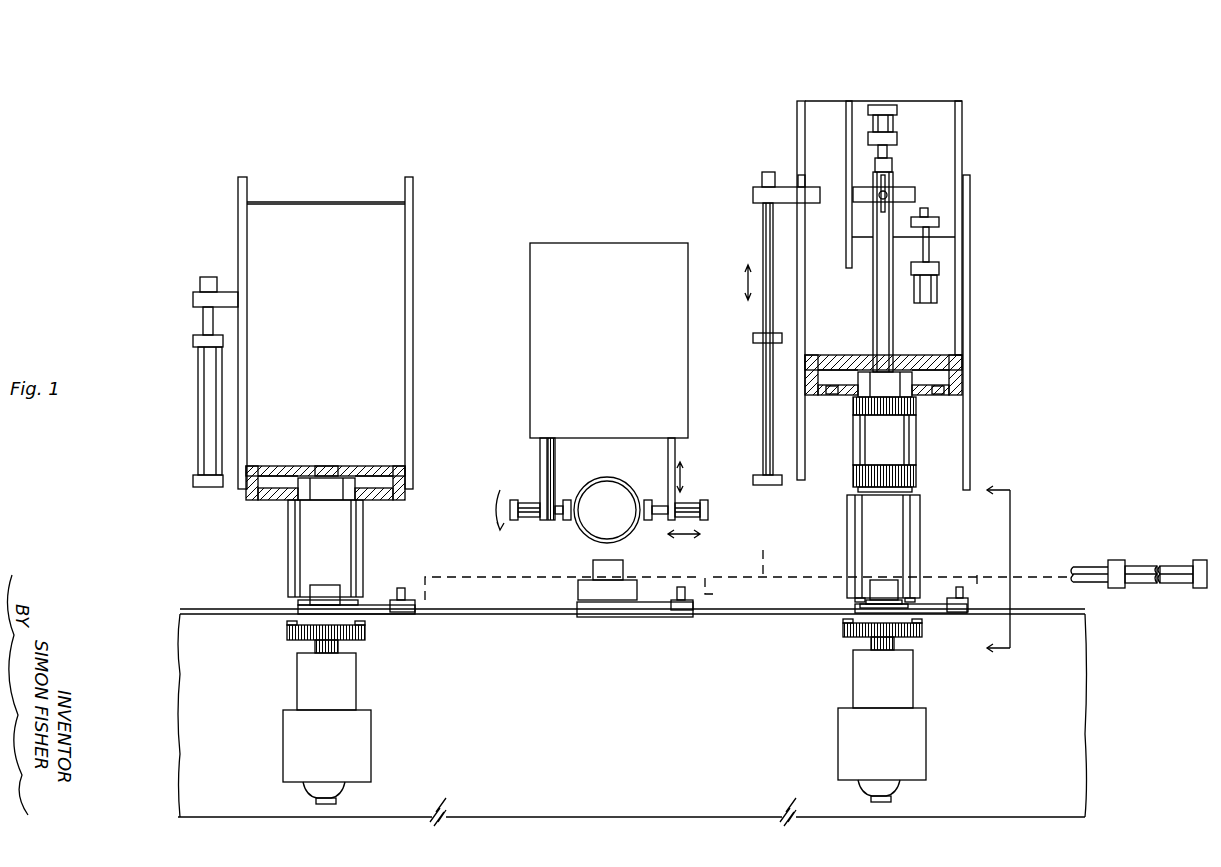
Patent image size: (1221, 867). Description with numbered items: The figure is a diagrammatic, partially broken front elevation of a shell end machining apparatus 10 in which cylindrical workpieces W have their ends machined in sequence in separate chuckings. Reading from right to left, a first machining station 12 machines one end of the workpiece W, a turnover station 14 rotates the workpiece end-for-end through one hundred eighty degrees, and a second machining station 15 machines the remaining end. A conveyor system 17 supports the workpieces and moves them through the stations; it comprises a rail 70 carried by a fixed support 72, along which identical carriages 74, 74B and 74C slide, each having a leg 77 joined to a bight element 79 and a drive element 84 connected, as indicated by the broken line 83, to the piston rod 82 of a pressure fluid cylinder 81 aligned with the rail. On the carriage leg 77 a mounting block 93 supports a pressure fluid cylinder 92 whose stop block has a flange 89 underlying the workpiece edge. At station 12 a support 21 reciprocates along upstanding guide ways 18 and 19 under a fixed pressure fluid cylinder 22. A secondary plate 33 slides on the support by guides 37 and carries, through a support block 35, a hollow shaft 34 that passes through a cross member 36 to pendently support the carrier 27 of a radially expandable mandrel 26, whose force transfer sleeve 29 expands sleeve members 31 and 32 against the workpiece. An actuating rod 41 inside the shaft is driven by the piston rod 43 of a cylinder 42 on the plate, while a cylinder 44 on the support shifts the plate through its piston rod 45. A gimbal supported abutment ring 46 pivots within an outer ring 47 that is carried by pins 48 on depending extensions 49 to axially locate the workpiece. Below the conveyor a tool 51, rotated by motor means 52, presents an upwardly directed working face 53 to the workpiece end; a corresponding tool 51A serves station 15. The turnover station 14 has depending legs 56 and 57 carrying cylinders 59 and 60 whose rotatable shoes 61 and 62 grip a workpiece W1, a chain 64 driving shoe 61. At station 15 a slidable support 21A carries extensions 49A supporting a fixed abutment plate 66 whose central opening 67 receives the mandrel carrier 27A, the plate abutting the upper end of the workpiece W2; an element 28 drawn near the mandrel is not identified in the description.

The machining apparatus 10 is at (999, 80).
The first machining station 12 is at (937, 80).
The turnover station 14 is at (630, 232).
The second machining station 15 is at (352, 106).
The conveyor system 17 is at (1120, 604).
The guide way 18 is at (800, 178).
The guide way 19 is at (972, 195).
The support 21 is at (823, 107).
The vertically slidable support 21A is at (238, 510).
The pressure fluid cylinder 22 is at (755, 338).
The radially expandable mandrel 26 is at (930, 430).
The carrier 27 is at (905, 383).
The expanding mandrel carrier 27A is at (338, 476).
The plate 28 is at (905, 490).
The force transfer sleeve 29 is at (915, 445).
The expandable sleeve member 31 is at (915, 408).
The expandable sleeve member 32 is at (910, 475).
The secondary support plate 33 is at (903, 108).
The hollow shaft 34 is at (875, 288).
The support block 35 is at (862, 197).
The cross member 36 is at (925, 360).
The guides 37 is at (960, 115).
The actuating rod 41 is at (876, 163).
The pressure fluid cylinder 42 is at (881, 128).
The piston rod 43 is at (878, 150).
The pressure fluid cylinder 44 is at (930, 290).
The piston rod 45 is at (930, 250).
The abutment ring 46 is at (830, 398).
The outer ring 47 is at (822, 395).
The pins 48 is at (810, 388).
The depending extensions 49 is at (810, 362).
The extensions 49A is at (248, 490).
The tool 51 is at (845, 629).
The tool 51A is at (290, 633).
The motor means 52 is at (840, 692).
The working face 53 is at (916, 623).
The leg 56 is at (540, 452).
The leg 57 is at (675, 458).
The pressure fluid cylinder 59 is at (520, 524).
The pressure fluid cylinder 60 is at (708, 516).
The rotatable shoe 61 is at (567, 500).
The rotatable shoe 62 is at (648, 500).
The chain 64 is at (548, 465).
The abutment plate 66 is at (275, 500).
The central opening 67 is at (310, 500).
The rail 70 is at (1082, 613).
The fixed support 72 is at (1083, 707).
The carriage 74 is at (846, 614).
The carriage 74B is at (605, 620).
The carriage 74C is at (375, 614).
The leg 77 is at (950, 612).
The cross member 79 is at (966, 605).
The pressure fluid cylinder 81 is at (1170, 572).
The piston rod 82 is at (1090, 572).
The broken line 83 is at (746, 571).
The drive element 84 is at (960, 587).
The flange 89 is at (866, 600).
The pressure fluid cylinder 92 is at (866, 578).
The mounting block 93 is at (860, 605).
The workpiece W is at (918, 540).
The workpiece W1 is at (580, 530).
The workpiece W2 is at (356, 548).